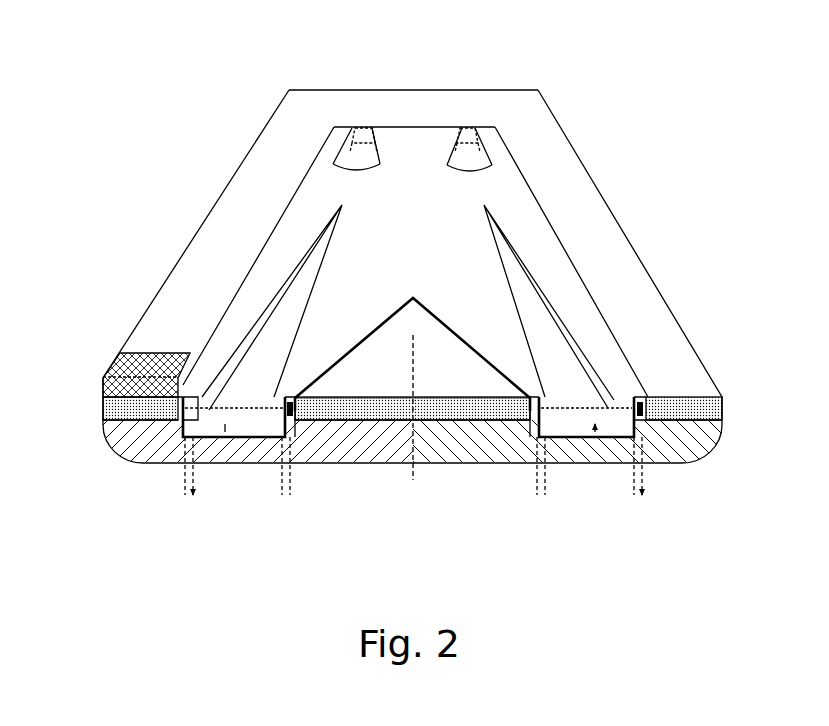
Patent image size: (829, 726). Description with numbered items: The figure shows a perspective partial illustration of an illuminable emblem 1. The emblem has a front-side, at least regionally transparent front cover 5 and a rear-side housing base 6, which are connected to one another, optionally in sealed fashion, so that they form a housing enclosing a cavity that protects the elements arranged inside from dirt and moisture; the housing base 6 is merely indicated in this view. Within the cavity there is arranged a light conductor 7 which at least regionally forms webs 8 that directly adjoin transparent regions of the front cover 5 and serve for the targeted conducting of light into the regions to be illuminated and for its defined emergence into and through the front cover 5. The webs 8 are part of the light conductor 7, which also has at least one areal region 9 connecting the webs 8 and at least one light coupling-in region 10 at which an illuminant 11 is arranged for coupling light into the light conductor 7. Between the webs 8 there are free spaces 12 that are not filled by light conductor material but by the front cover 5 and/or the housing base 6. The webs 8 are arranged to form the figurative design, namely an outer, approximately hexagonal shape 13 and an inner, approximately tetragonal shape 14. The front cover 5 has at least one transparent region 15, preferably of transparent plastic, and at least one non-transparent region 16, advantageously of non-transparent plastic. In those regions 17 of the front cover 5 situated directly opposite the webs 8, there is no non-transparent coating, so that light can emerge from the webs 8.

The emblem 1 is at (604, 62).
The front cover 5 is at (103, 428).
The housing base 6 is at (100, 380).
The light conductor 7 is at (520, 194).
The webs 8 is at (448, 135).
The areal region 9 is at (406, 147).
The light coupling-in region 10 is at (357, 128).
The illuminant 11 is at (355, 153).
The free spaces 12 is at (208, 466).
The outer hexagonal shape 13 is at (590, 320).
The inner tetragonal shape 14 is at (318, 340).
The transparent region 15 is at (172, 466).
The non-transparent region 16 is at (100, 413).
The regions opposite the webs 17 is at (172, 465).